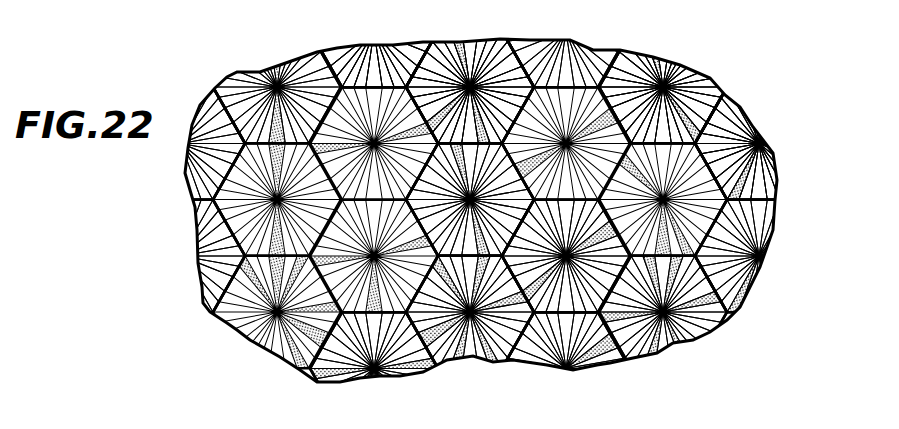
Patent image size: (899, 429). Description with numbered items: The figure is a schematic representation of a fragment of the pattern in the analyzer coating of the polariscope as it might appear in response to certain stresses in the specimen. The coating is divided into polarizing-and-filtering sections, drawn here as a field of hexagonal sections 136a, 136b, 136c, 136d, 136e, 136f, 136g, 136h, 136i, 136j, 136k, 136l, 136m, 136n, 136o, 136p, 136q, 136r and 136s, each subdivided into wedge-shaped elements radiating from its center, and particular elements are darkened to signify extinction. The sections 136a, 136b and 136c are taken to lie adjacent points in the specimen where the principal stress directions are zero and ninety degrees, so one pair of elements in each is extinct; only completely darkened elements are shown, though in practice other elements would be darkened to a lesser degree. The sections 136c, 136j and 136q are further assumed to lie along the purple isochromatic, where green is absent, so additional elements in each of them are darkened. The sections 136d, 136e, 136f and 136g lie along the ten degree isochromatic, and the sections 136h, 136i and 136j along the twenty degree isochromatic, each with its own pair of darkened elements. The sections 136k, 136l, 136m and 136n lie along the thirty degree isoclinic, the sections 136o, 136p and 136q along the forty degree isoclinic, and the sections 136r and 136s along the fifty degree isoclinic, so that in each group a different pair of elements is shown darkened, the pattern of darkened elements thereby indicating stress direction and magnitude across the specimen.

The section 136a is at (260, 87).
The section 136b is at (181, 143).
The section 136c is at (181, 256).
The section 136d is at (374, 43).
The section 136e is at (378, 43).
The section 136f is at (470, 199).
The section 136g is at (374, 368).
The section 136h is at (476, 71).
The section 136i is at (470, 87).
The section 136j is at (470, 331).
The section 136k is at (581, 43).
The section 136l is at (663, 87).
The section 136m is at (579, 256).
The section 136n is at (566, 368).
The section 136o is at (691, 87).
The section 136p is at (759, 143).
The section 136q is at (685, 312).
The section 136r is at (770, 143).
The section 136s is at (768, 256).